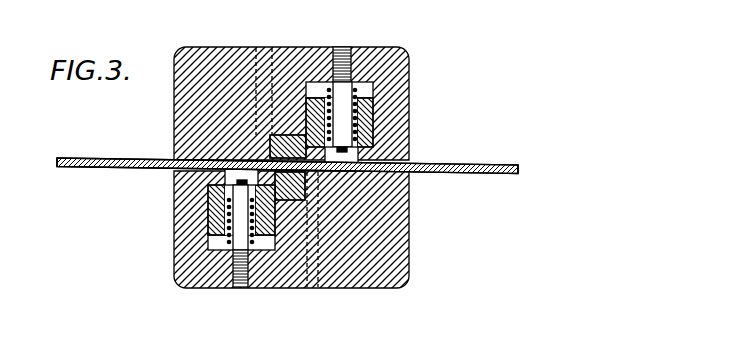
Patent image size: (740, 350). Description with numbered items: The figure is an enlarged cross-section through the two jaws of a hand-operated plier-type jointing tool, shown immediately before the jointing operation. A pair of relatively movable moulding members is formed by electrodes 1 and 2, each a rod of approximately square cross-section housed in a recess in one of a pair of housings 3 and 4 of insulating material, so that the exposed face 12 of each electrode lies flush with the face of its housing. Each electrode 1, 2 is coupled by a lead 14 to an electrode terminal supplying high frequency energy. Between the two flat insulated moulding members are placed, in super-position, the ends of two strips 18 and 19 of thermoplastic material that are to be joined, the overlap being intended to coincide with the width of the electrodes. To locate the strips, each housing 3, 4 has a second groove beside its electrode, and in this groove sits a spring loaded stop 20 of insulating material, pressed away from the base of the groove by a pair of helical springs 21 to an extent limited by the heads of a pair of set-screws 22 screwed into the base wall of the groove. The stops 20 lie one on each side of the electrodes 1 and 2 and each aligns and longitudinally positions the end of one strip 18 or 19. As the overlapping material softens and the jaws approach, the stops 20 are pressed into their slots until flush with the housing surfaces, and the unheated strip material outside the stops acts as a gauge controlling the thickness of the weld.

The electrode 1 is at (292, 135).
The electrode 2 is at (296, 200).
The housing 3 is at (384, 48).
The housing 4 is at (392, 273).
The exposed face of the electrode 12 is at (310, 178).
The lead 14 is at (410, 176).
The strip of thermoplastic material 18 is at (140, 158).
The strip of thermoplastic material 19 is at (472, 165).
The spring loaded stop 20 is at (373, 104).
The helical springs 21 is at (373, 83).
The set-screws 22 is at (340, 137).